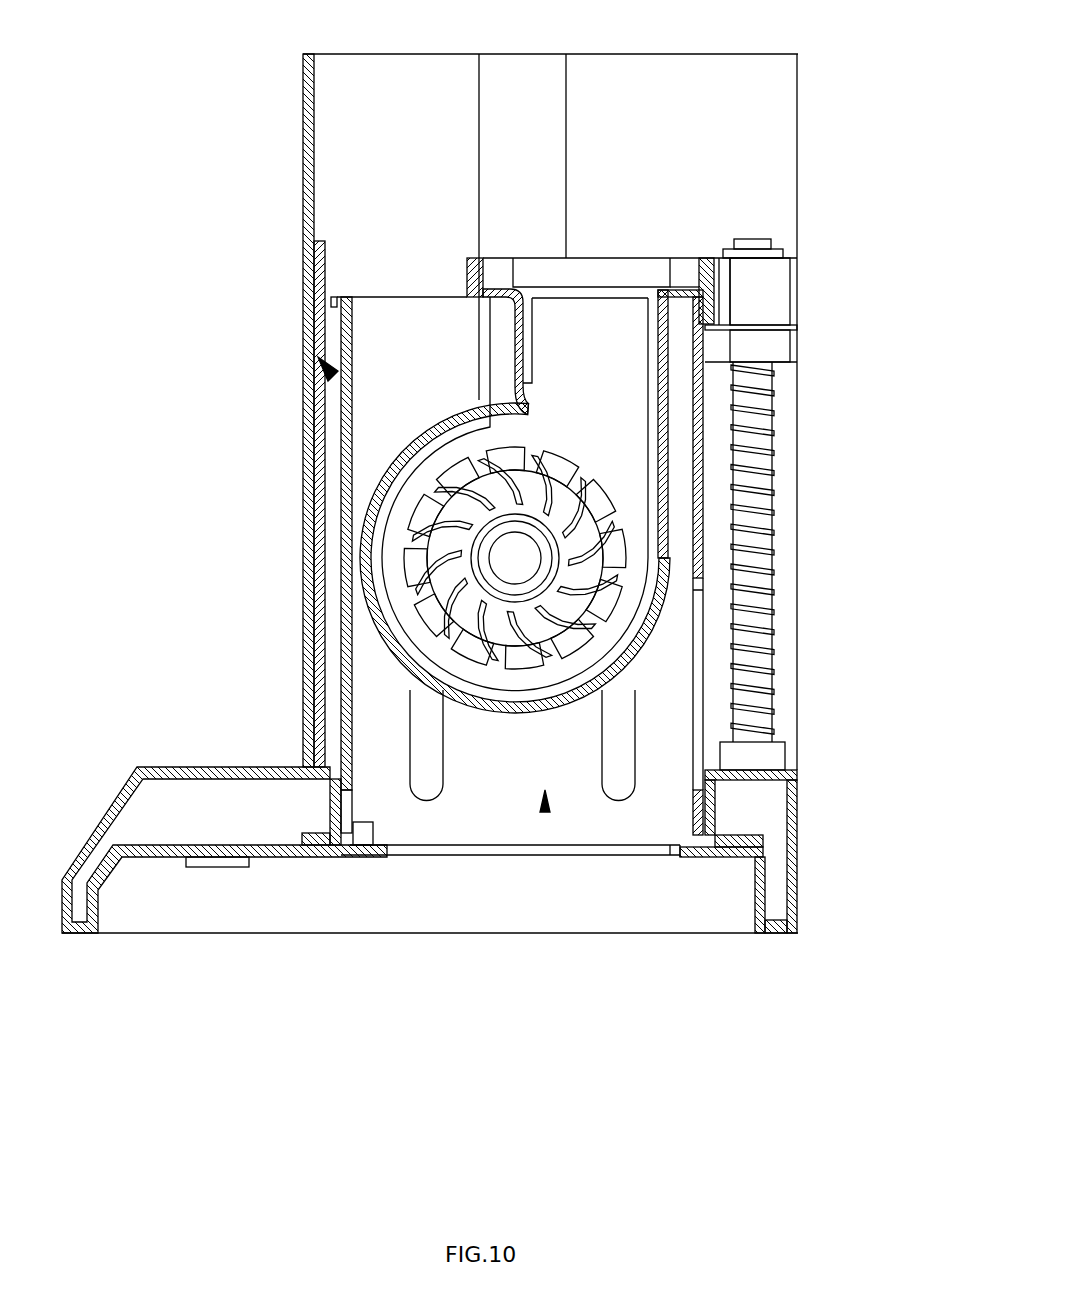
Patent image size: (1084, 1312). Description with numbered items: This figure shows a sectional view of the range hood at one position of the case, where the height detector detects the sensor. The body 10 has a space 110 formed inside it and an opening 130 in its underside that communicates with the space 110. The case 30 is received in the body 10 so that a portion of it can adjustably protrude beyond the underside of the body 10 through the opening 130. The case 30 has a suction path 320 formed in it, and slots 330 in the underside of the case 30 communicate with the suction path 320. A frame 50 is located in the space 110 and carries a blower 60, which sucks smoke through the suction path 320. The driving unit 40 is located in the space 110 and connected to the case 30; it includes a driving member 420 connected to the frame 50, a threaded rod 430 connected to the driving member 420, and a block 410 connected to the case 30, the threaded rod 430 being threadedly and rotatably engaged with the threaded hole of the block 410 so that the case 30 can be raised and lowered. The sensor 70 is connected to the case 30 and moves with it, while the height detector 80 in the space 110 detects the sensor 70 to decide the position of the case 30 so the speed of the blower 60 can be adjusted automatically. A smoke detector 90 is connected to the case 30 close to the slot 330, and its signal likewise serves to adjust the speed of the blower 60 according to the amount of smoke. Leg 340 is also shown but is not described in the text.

The body 10 is at (303, 105).
The case 30 is at (338, 525).
The driving unit 40 is at (825, 469).
The frame 50 is at (708, 268).
The blower 60 is at (522, 380).
The sensor 70 is at (335, 297).
The height detector 80 is at (313, 430).
The smoke detector 90 is at (368, 834).
The space 110 is at (333, 377).
The opening 130 is at (322, 853).
The suction path 320 is at (545, 812).
The slot 330 is at (448, 850).
The support leg 340 is at (602, 775).
The block 410 is at (782, 347).
The driving member 420 is at (770, 273).
The threaded rod 430 is at (760, 497).